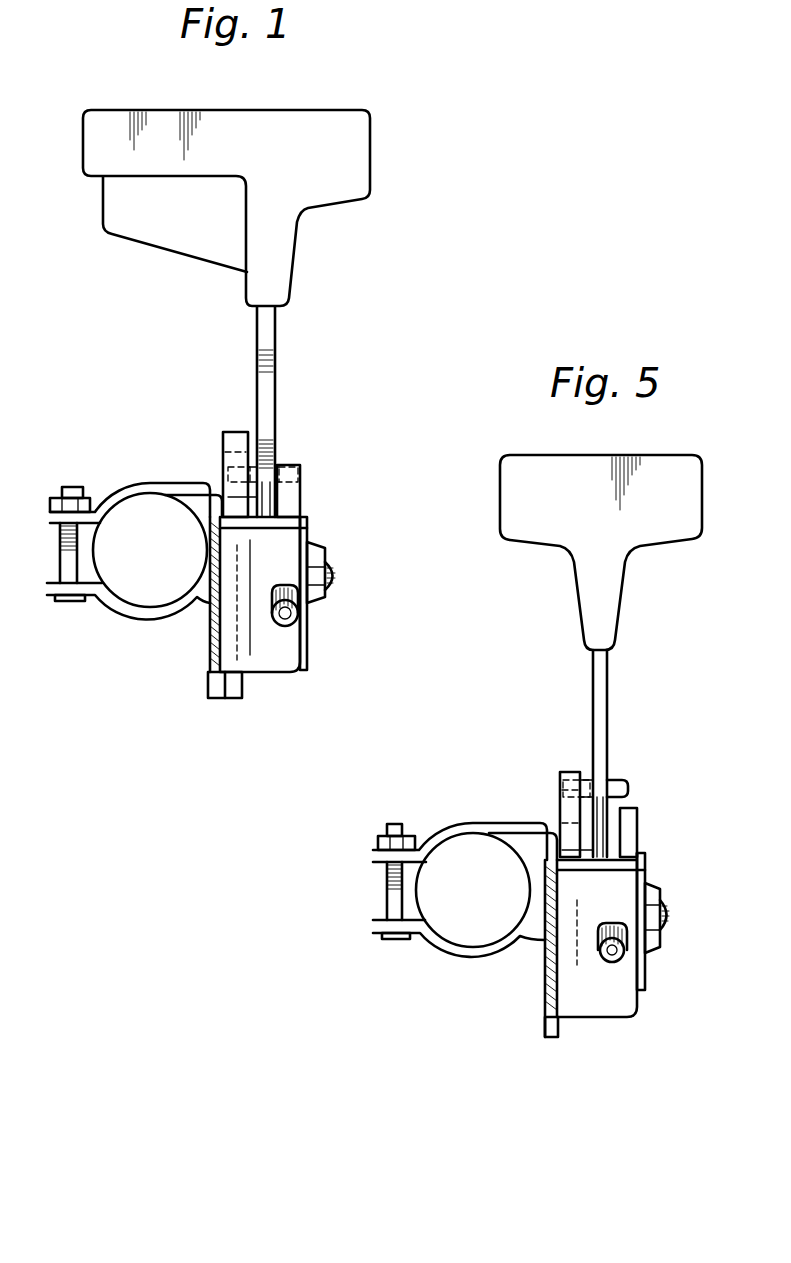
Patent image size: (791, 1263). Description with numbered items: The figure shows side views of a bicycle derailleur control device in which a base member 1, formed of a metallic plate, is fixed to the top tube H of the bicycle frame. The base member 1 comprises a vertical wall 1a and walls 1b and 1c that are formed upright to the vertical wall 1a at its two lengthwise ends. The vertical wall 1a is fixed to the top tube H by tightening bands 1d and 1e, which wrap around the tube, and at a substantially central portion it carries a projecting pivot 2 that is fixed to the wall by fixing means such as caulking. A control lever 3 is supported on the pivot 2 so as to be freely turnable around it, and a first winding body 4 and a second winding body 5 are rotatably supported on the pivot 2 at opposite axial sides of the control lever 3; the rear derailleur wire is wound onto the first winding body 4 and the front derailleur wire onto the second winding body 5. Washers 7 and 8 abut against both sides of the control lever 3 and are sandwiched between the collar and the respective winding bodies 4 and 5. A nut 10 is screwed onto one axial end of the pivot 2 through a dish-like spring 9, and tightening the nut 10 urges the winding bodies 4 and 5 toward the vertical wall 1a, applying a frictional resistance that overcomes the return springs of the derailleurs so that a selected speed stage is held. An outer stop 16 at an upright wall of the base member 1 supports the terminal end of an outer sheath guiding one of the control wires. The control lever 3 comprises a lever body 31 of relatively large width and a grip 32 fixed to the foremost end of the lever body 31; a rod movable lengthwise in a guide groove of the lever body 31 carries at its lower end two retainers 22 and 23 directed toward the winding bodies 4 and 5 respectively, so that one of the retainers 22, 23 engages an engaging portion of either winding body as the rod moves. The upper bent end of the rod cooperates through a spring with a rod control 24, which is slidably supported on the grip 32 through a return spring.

In FIG. 1, the base member 1 is at (266, 647).
In FIG. 5, the base member 1 is at (570, 983).
In FIG. 1, the vertical wall 1a is at (208, 685).
In FIG. 5, the wall 1b is at (607, 1020).
In FIG. 1, the wall 1c is at (268, 668).
In FIG. 1, the tightening band 1d is at (150, 483).
In FIG. 5, the tightening band 1d is at (492, 815).
In FIG. 1, the tightening band 1e is at (140, 612).
In FIG. 5, the tightening band 1e is at (472, 957).
In FIG. 1, the pivot 2 is at (336, 578).
In FIG. 5, the pivot 2 is at (668, 920).
In FIG. 1, the control lever 3 is at (322, 411).
In FIG. 5, the control lever 3 is at (612, 686).
In FIG. 1, the first winding body 4 is at (302, 500).
In FIG. 5, the first winding body 4 is at (630, 832).
In FIG. 1, the second winding body 5 is at (222, 445).
In FIG. 5, the second winding body 5 is at (560, 770).
In FIG. 1, the washer 7 is at (278, 490).
In FIG. 5, the washer 7 is at (612, 852).
In FIG. 1, the washer 8 is at (252, 500).
In FIG. 5, the washer 8 is at (583, 852).
In FIG. 1, the dish-like spring 9 is at (310, 532).
In FIG. 5, the dish-like spring 9 is at (645, 870).
In FIG. 1, the nut 10 is at (326, 548).
In FIG. 5, the nut 10 is at (660, 893).
In FIG. 1, the outer stop 16 is at (312, 612).
In FIG. 5, the outer stop 16 is at (645, 975).
In FIG. 1, the retainer 22 is at (275, 468).
In FIG. 5, the retainer 22 is at (622, 778).
In FIG. 1, the retainer 23 is at (245, 475).
In FIG. 5, the retainer 23 is at (590, 780).
In FIG. 1, the rod control 24 is at (185, 243).
In FIG. 1, the lever body 31 is at (277, 335).
In FIG. 1, the grip 32 is at (283, 255).
In FIG. 1, the top tube H is at (93, 565).